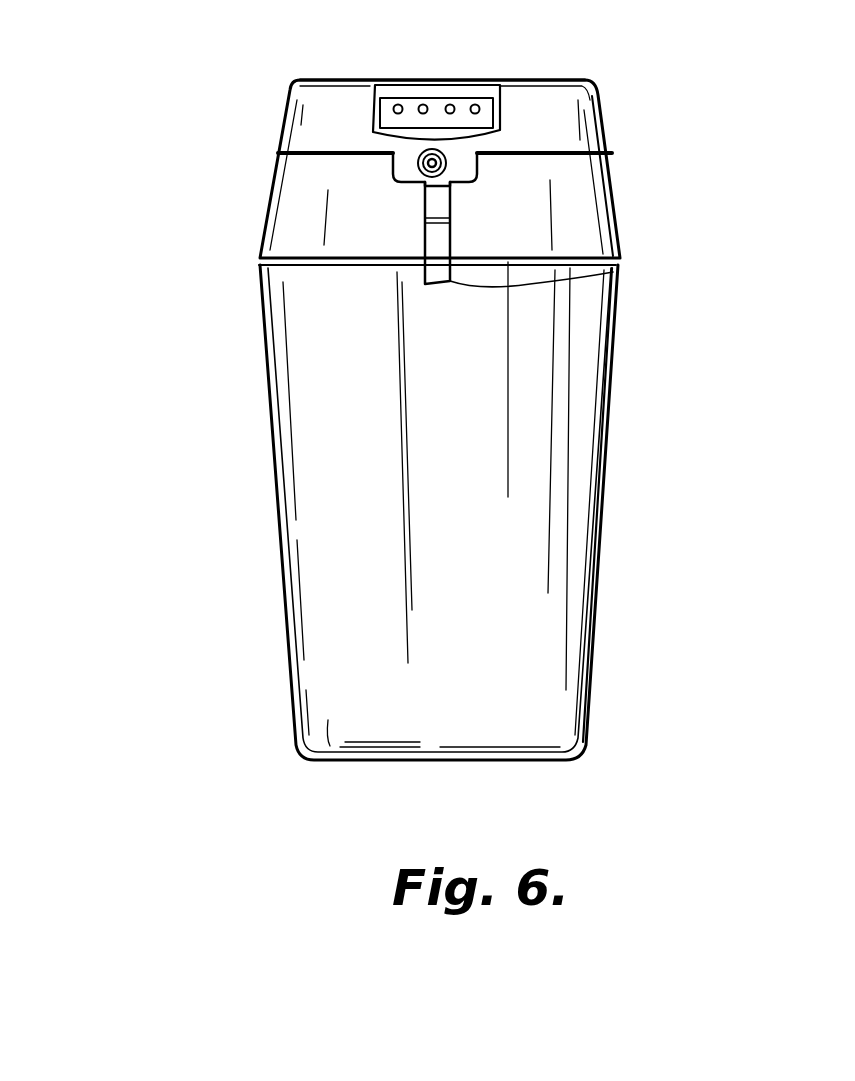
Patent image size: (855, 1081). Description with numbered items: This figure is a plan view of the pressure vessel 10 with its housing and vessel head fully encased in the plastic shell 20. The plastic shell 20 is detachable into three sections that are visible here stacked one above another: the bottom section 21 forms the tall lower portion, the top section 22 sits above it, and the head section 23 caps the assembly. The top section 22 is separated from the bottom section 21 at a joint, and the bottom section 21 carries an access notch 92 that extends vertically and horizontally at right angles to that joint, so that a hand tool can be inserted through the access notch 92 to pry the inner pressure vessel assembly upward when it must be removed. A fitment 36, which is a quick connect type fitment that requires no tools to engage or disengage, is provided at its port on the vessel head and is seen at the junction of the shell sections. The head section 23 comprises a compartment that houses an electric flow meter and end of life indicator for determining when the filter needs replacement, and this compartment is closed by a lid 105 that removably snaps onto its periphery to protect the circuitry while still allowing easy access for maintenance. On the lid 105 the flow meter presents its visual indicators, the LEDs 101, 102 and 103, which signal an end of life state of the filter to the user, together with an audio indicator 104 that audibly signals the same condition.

The pressure vessel 10 is at (280, 782).
The plastic shell 20 is at (155, 787).
The bottom section 21 is at (593, 563).
The top section 22 is at (613, 207).
The head section 23 is at (580, 113).
The fitment 36 is at (477, 161).
The access notch 92 is at (613, 272).
The LED 101 is at (424, 103).
The LED 102 is at (452, 103).
The LED 103 is at (477, 103).
The audio indicator 104 is at (397, 103).
The lid 105 is at (377, 87).